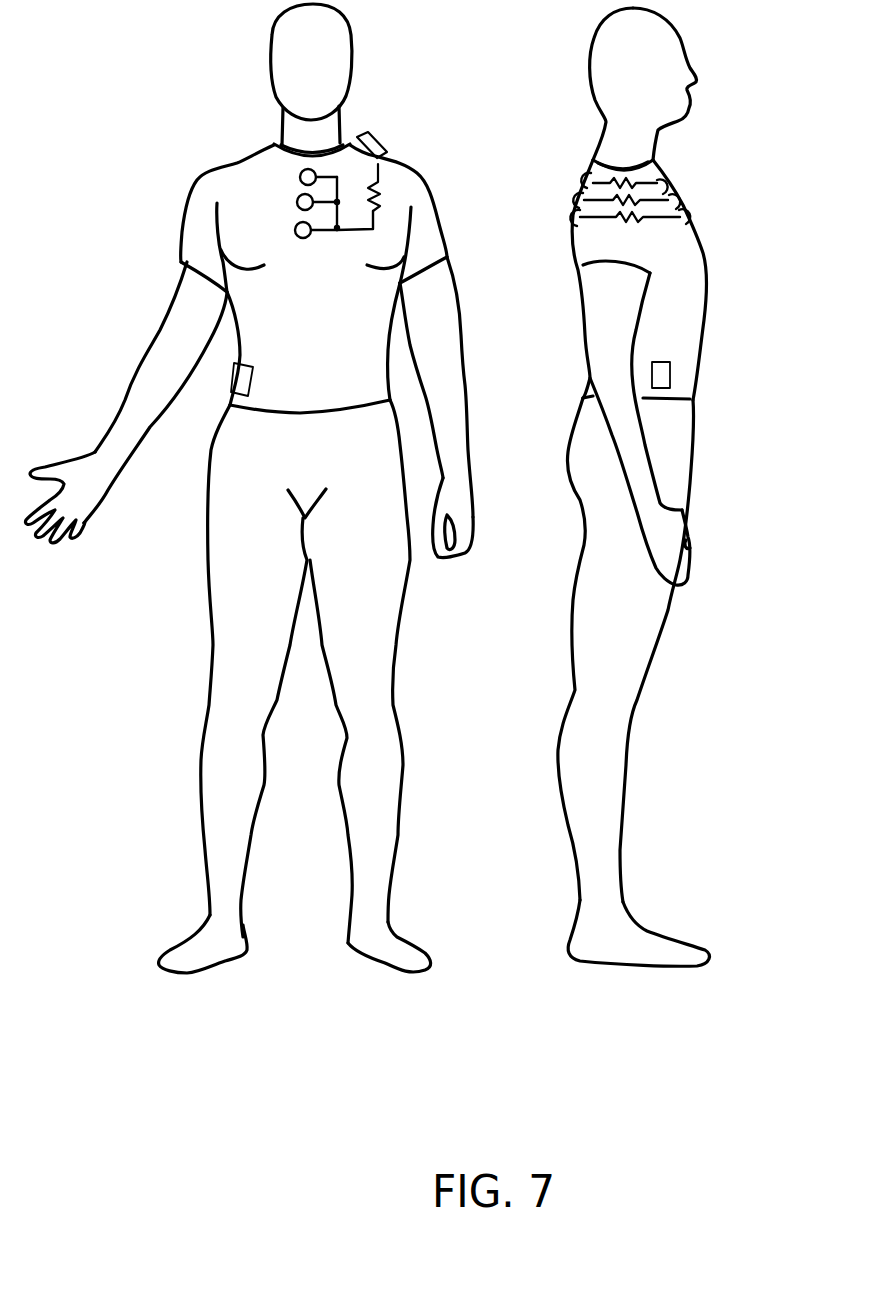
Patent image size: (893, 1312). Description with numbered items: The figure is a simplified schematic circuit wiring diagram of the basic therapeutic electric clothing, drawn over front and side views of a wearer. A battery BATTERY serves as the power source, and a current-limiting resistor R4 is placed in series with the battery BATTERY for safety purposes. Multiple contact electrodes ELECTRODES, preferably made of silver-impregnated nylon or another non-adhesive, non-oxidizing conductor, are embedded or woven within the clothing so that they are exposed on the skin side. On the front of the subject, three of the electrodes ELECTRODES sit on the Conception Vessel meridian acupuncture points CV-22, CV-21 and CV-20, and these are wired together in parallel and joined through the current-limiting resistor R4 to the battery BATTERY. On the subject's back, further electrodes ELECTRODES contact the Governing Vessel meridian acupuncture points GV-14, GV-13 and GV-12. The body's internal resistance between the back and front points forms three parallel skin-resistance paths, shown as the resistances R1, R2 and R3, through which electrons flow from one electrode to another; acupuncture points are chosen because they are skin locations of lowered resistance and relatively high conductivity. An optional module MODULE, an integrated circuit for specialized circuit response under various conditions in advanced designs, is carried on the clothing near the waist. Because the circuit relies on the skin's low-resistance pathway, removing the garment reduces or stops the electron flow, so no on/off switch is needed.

The battery BATTERY is at (380, 138).
The Conception Vessel meridian acupuncture point CV-22 is at (295, 178).
The Conception Vessel meridian acupuncture point CV-21 is at (292, 203).
The Conception Vessel meridian acupuncture point CV-20 is at (292, 231).
The current-limiting resistor R4 is at (383, 188).
The multiple contact electrodes ELECTRODES is at (308, 245).
The module MODULE is at (262, 382).
The Governing Vessel meridian acupuncture point GV-14 is at (551, 179).
The Governing Vessel meridian acupuncture point GV-13 is at (549, 202).
The Governing Vessel meridian acupuncture point GV-12 is at (547, 222).
The skin resistance R1 is at (625, 217).
The skin resistance R2 is at (626, 225).
The skin resistance R3 is at (630, 234).